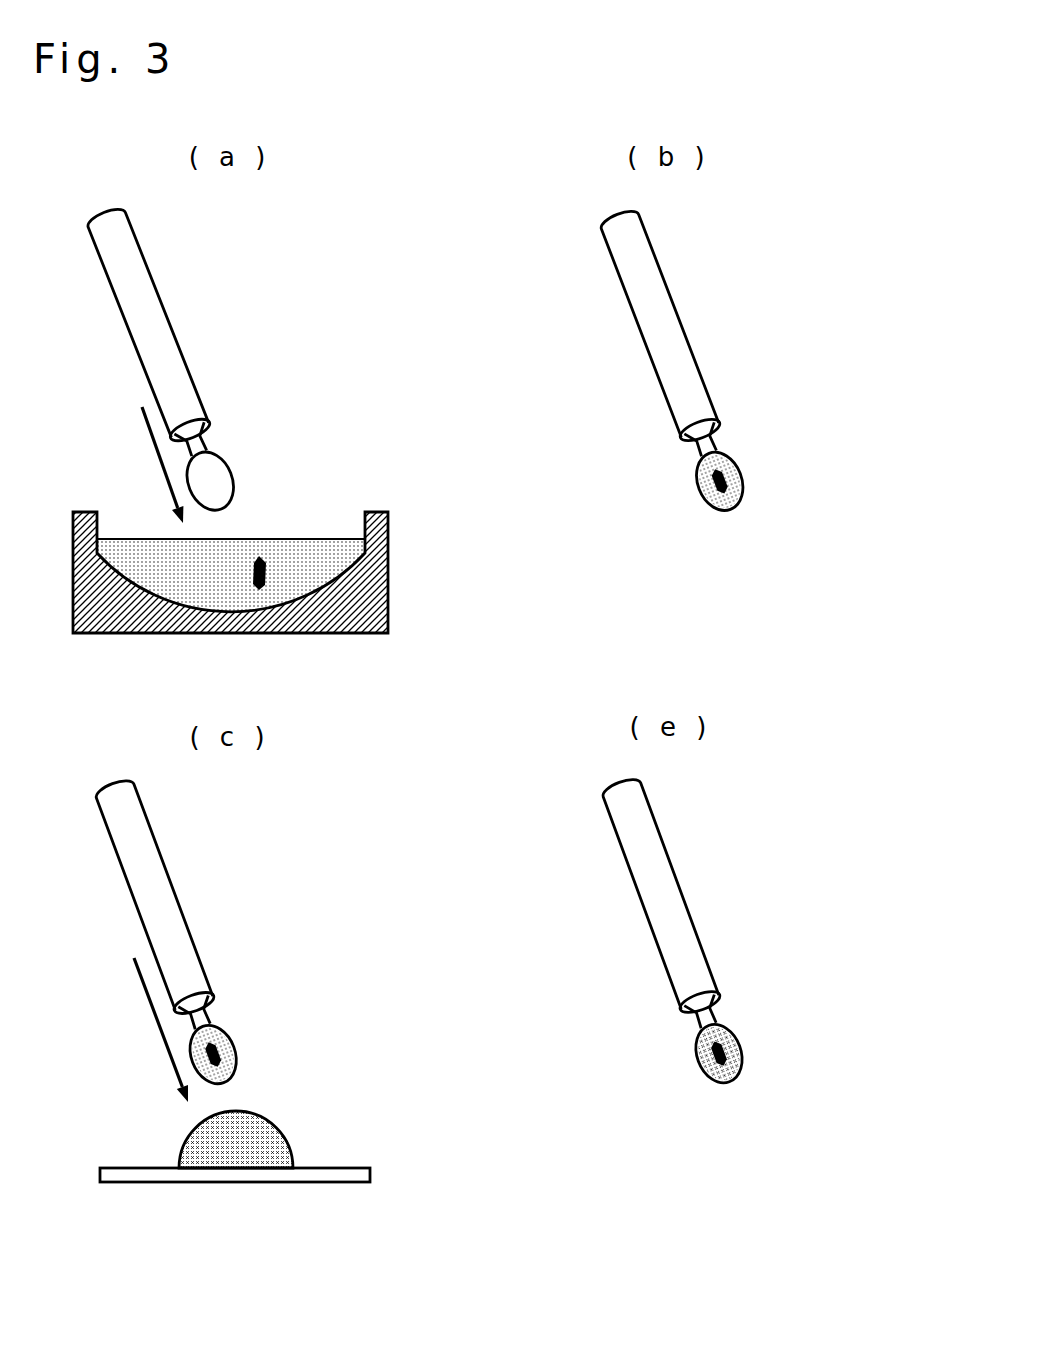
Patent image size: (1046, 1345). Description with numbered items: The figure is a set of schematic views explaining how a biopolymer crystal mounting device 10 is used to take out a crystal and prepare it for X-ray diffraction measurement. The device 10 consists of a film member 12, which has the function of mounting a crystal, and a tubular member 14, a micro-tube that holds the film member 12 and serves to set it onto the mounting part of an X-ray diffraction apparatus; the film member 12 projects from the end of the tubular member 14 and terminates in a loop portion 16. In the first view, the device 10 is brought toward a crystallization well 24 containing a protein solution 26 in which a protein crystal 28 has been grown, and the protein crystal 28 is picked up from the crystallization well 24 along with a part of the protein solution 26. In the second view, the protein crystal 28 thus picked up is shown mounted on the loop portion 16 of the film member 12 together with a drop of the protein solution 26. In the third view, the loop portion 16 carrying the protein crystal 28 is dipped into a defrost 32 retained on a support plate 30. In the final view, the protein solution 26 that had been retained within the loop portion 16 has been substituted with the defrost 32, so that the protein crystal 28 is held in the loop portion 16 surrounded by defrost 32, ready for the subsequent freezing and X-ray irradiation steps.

The biopolymer crystal mounting device 10 is at (474, 648).
The film member 12 is at (195, 447).
The tubular member 14 is at (132, 268).
The loop portion 16 is at (227, 472).
The crystallization well 24 is at (300, 617).
The protein solution 26 is at (323, 553).
The protein crystal 28 is at (260, 556).
The support plate 30 is at (343, 1177).
The defrost 32 is at (210, 1152).